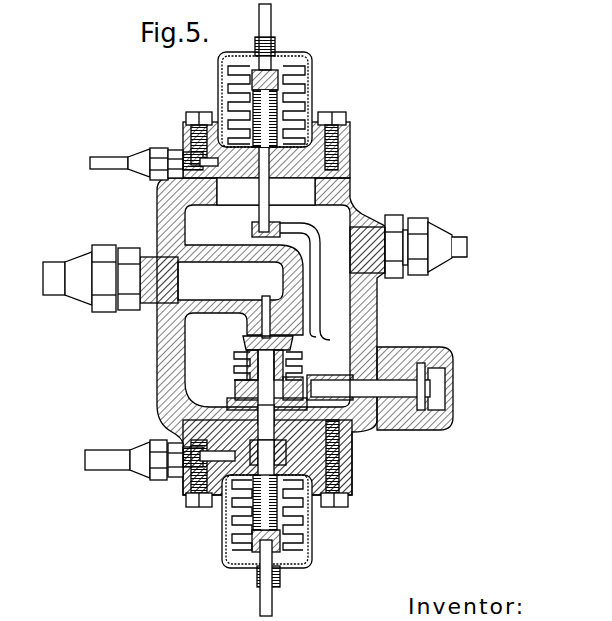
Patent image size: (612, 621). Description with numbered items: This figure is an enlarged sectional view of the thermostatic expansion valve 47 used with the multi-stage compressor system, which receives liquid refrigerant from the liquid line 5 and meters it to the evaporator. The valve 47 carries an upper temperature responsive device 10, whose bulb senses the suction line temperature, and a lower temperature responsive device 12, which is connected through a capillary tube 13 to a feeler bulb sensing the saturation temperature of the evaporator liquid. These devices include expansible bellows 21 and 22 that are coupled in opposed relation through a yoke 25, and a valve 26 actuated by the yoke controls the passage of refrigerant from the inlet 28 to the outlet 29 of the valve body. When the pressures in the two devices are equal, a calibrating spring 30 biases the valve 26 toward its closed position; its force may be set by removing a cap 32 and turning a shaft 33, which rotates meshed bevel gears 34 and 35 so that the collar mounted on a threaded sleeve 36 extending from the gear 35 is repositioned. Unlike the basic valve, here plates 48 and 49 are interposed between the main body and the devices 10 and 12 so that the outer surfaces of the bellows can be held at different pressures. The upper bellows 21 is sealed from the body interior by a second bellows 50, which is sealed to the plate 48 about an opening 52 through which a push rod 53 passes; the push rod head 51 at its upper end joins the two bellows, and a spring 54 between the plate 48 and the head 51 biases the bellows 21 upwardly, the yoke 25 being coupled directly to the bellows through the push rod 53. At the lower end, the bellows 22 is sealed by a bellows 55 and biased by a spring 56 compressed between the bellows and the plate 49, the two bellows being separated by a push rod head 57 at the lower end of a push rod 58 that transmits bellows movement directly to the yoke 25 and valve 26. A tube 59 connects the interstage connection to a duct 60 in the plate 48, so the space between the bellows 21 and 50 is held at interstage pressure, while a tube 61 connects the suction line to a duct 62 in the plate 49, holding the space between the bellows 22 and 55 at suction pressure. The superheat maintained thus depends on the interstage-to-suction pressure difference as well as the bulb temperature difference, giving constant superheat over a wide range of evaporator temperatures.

The liquid line 5 is at (461, 238).
The temperature responsive device 10 is at (264, 75).
The temperature responsive device 12 is at (264, 545).
The capillary tube 13 is at (260, 603).
The bellows 21 is at (232, 85).
The bellows 22 is at (228, 538).
The yoke 25 is at (304, 300).
The valve 26 is at (262, 338).
The inlet 28 is at (372, 224).
The outlet 29 is at (172, 279).
The calibrating spring 30 is at (290, 355).
The cap 32 is at (440, 355).
The shaft 33 is at (404, 400).
The bevel gear 34 is at (305, 384).
The bevel gear 35 is at (232, 404).
The threaded sleeve 36 is at (316, 388).
The thermostatic expansion valve 47 is at (410, 313).
The plate 48 is at (352, 162).
The plate 49 is at (352, 458).
The sealing bellows 50 is at (236, 104).
The push rod head 51 is at (268, 78).
The opening 52 is at (270, 158).
The push rod 53 is at (260, 212).
The spring 54 is at (296, 101).
The bellows 55 is at (228, 519).
The spring 56 is at (290, 546).
The push rod head 57 is at (272, 548).
The push rod 58 is at (245, 373).
The tube 59 is at (107, 165).
The duct 60 is at (185, 130).
The tube 61 is at (106, 456).
The duct 62 is at (195, 470).